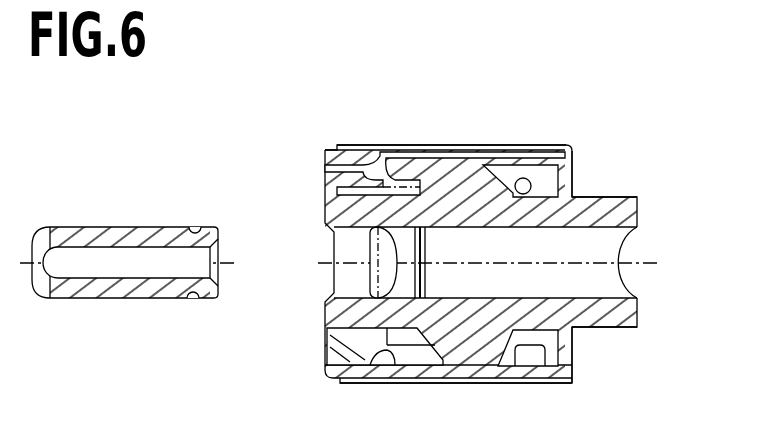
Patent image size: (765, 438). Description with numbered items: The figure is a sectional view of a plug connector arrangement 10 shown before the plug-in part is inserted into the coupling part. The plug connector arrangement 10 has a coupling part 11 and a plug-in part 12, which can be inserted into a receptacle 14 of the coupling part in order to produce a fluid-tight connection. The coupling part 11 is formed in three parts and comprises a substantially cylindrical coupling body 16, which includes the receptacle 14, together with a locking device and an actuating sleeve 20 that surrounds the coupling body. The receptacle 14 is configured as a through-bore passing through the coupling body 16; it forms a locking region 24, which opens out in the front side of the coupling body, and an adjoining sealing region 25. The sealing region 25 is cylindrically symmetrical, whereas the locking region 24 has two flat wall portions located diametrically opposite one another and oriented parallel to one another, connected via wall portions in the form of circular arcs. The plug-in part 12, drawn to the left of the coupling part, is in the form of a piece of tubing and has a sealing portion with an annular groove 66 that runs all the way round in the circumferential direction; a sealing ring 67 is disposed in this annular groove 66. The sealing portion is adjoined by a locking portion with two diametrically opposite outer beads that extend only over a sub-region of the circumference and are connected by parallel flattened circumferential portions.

The plug connector arrangement 10 is at (361, 217).
The coupling part 11 is at (468, 112).
The plug-in part 12 is at (59, 326).
The receptacle 14 is at (600, 243).
The coupling body 16 is at (604, 182).
The actuating sleeve 20 is at (569, 131).
The locking region 24 is at (345, 298).
The sealing region 25 is at (548, 298).
The annular groove 66 is at (195, 226).
The sealing ring 67 is at (193, 300).